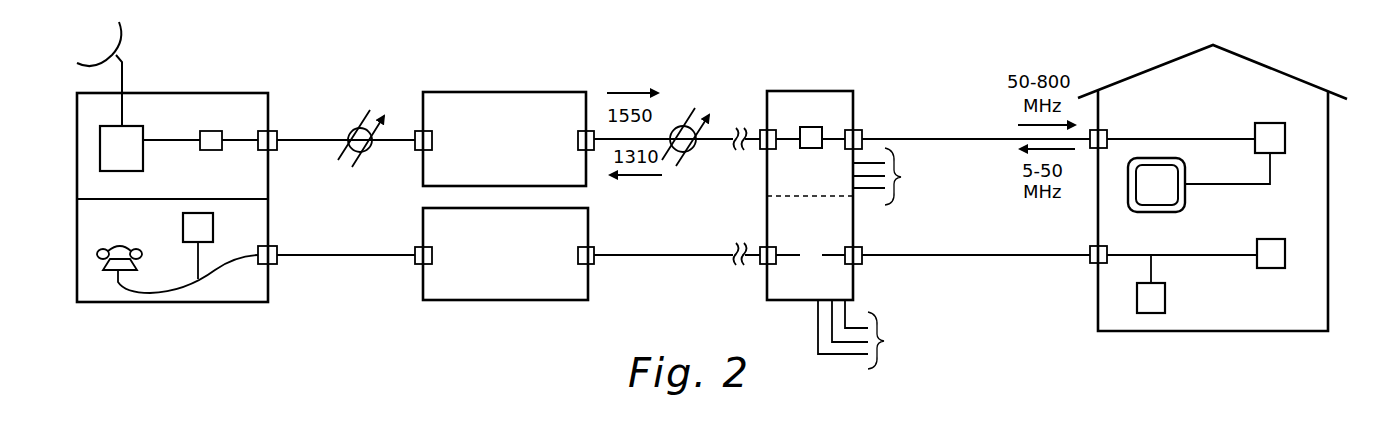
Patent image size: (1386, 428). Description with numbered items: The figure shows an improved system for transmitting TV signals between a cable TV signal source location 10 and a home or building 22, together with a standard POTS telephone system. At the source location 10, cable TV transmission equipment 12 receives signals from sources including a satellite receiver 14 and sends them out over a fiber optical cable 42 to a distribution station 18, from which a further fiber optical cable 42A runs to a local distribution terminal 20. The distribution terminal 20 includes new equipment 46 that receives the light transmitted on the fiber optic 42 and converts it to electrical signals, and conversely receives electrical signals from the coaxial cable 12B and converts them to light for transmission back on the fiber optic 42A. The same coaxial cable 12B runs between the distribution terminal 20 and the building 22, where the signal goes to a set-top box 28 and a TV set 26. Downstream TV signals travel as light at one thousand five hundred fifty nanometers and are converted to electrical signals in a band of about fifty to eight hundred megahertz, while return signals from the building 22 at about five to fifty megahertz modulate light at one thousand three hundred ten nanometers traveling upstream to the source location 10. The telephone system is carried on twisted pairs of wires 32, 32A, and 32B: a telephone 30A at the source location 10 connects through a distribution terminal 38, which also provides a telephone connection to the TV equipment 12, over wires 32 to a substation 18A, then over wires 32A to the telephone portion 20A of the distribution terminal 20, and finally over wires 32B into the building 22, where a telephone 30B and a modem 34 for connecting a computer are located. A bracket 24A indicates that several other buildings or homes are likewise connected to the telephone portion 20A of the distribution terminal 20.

The cable TV signal source location 10 is at (192, 92).
The cable TV transmission equipment 12 is at (133, 159).
The satellite receiver 14 is at (124, 82).
The station 18 is at (521, 92).
The substation 18A is at (518, 300).
The distribution terminal 20 is at (782, 85).
The portion of distribution terminal 20A is at (832, 267).
The home or building 22 is at (1262, 65).
The bracket 24A is at (883, 258).
The TV set 26 is at (1157, 200).
The set-top box 28 is at (1265, 123).
The telephone 30A is at (108, 240).
The telephone 30B is at (1275, 268).
The pair of twisted wires 32 is at (342, 254).
The pair of twisted wires 32A is at (685, 253).
The pair of twisted wires 32B is at (958, 253).
The modem 34 is at (1161, 305).
The distribution terminal 38 is at (195, 228).
The fiber optical cable 42 is at (306, 138).
The fiber optical cable 42A is at (722, 134).
The new equipment 46 is at (800, 146).
The coaxial cable 12B is at (893, 137).